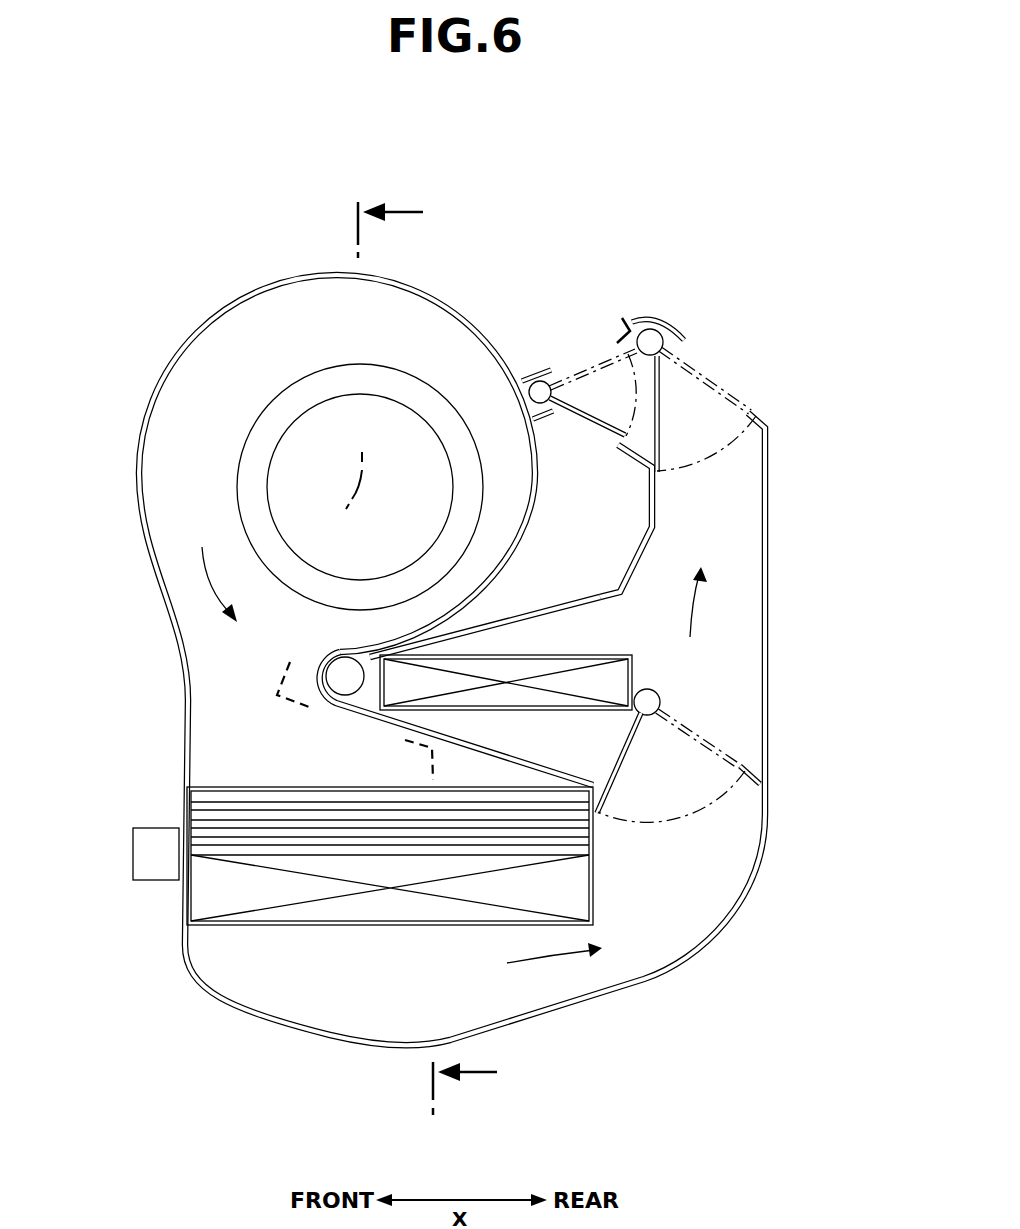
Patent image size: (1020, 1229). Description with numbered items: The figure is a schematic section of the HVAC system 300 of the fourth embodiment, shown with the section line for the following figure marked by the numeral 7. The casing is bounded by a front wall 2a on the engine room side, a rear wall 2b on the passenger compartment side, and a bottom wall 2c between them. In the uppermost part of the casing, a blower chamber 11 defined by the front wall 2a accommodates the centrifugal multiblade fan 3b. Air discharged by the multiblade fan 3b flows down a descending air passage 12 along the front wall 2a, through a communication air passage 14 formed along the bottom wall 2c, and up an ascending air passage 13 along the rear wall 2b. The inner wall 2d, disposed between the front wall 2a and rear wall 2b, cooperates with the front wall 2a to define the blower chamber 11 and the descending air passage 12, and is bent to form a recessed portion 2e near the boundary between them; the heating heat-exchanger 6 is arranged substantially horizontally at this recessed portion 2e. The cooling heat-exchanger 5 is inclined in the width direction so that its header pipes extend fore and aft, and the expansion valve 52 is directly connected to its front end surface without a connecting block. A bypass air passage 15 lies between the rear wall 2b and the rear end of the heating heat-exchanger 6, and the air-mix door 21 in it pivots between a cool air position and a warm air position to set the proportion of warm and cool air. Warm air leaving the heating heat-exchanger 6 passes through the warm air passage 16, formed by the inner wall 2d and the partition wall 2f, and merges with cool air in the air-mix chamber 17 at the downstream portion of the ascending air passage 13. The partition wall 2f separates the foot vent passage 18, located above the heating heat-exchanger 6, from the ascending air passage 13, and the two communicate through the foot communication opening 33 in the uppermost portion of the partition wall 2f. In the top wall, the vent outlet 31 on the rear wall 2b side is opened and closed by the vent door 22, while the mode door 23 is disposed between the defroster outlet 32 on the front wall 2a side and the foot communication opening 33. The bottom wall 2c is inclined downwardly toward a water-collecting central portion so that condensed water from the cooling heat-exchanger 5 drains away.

The HVAC system 300 is at (474, 624).
The front wall 2a is at (168, 622).
The rear wall 2b is at (772, 632).
The bottom wall 2c is at (600, 993).
The inner wall 2d is at (420, 645).
The recessed portion 2e is at (330, 660).
The partition wall 2f is at (643, 560).
The centrifugal multiblade fan 3b is at (362, 368).
The cooling heat-exchanger 5 is at (392, 925).
The heating heat-exchanger 6 is at (556, 666).
The section line VII-VII 7 is at (442, 656).
The blower chamber 11 is at (210, 370).
The descending air passage 12 is at (222, 737).
The ascending air passage 13 is at (730, 600).
The communication air passage 14 is at (438, 992).
The bypass air passage 15 is at (735, 697).
The warm air passage 16 is at (553, 649).
The air-mix chamber 17 is at (737, 517).
The foot vent passage 18 is at (595, 552).
The air-mix door 21 is at (628, 755).
The vent door 22 is at (663, 418).
The mode door 23 is at (598, 422).
The vent outlet 31 is at (718, 378).
The defroster outlet 32 is at (566, 352).
The foot communication opening 33 is at (578, 432).
The expansion valve 52 is at (133, 852).